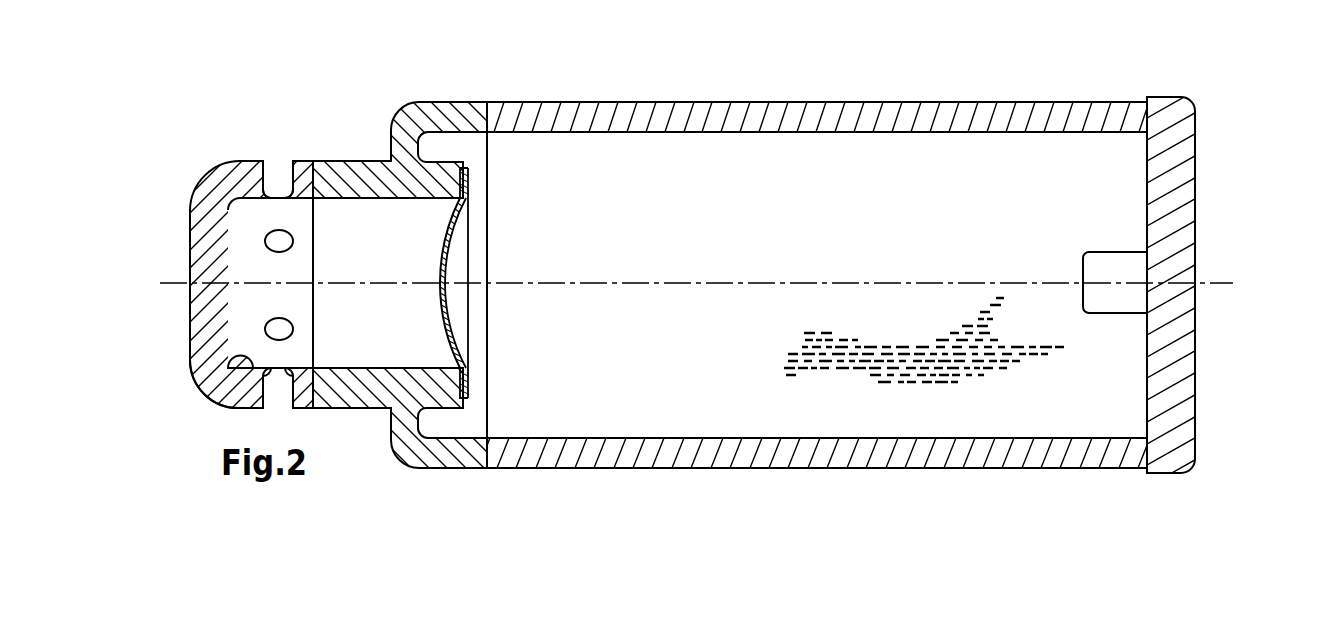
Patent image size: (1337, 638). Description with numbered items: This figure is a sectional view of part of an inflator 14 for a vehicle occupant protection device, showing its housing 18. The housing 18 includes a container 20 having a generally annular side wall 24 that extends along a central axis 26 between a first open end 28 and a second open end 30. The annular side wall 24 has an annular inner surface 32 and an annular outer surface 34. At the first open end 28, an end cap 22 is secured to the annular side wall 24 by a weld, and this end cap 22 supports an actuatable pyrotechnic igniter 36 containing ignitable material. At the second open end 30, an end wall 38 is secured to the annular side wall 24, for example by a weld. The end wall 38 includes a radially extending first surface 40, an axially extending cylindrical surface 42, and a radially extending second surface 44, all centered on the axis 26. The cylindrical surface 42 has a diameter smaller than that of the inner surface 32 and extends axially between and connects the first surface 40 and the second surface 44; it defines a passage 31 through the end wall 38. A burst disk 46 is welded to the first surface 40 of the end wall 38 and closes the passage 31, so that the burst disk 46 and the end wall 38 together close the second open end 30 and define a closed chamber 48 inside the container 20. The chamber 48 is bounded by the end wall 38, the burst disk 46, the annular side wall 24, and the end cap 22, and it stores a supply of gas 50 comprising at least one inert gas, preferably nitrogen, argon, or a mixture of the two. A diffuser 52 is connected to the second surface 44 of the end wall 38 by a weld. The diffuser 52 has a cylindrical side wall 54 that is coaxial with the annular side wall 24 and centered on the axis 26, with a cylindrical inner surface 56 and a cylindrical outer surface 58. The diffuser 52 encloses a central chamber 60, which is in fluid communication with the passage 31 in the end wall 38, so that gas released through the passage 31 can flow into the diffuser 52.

The inflator 14 is at (886, 68).
The housing 18 is at (1104, 74).
The container 20 is at (907, 92).
The end cap 22 is at (1210, 396).
The annular side wall 24 is at (665, 101).
The central axis 26 is at (1212, 281).
The first open end 28 is at (1148, 195).
The second open end 30 is at (487, 412).
The passage 31 is at (486, 283).
The annular inner surface 32 is at (776, 133).
The annular outer surface 34 is at (757, 101).
The actuatable pyrotechnic igniter 36 is at (1128, 262).
The end wall 38 is at (454, 100).
The first surface 40 is at (468, 186).
The cylindrical surface 42 is at (430, 285).
The second surface 44 is at (316, 388).
The burst disk 46 is at (453, 313).
The chamber 48 is at (676, 374).
The supply of gas 50 is at (853, 347).
The diffuser 52 is at (281, 259).
The cylindrical side wall 54 is at (250, 390).
The cylindrical inner surface 56 is at (188, 364).
The cylindrical outer surface 58 is at (303, 160).
The central chamber 60 is at (252, 257).